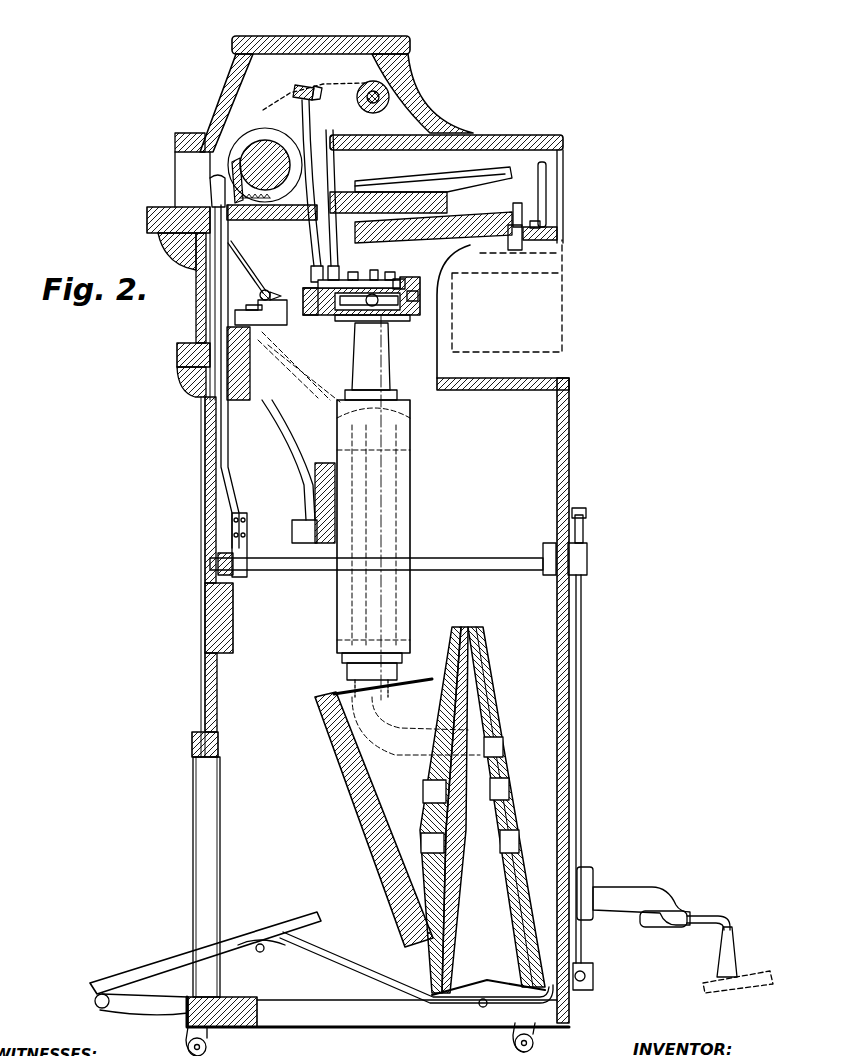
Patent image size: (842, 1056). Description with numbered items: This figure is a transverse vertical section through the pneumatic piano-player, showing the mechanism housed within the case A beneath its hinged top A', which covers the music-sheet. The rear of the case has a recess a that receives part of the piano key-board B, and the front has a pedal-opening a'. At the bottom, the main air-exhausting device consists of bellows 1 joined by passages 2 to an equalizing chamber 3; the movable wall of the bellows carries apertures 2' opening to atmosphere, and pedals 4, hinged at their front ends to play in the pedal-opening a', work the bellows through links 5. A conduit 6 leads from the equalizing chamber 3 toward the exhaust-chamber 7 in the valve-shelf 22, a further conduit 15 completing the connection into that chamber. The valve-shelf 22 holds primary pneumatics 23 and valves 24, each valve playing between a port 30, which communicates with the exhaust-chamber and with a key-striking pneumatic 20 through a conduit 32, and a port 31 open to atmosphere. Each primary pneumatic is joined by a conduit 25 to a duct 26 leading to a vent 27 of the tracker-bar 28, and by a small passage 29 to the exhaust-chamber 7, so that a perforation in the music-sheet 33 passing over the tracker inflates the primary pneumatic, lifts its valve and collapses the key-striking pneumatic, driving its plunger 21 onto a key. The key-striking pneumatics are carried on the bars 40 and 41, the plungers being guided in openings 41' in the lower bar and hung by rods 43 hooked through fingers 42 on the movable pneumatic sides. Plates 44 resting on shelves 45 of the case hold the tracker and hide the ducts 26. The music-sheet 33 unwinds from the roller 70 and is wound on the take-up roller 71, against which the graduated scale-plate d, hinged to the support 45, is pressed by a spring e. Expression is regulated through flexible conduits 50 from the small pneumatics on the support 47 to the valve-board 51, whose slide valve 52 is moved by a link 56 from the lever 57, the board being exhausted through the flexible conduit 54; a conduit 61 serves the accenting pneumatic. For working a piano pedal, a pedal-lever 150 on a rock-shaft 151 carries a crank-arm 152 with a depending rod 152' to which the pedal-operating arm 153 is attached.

The bellows 1 is at (523, 943).
The passages 2 is at (430, 810).
The apertures 2' is at (506, 807).
The equalizing chamber 3 is at (382, 792).
The pedals 4 is at (278, 928).
The links 5 is at (368, 980).
The conduit 6 is at (355, 687).
The exhaust-chamber 7 is at (334, 316).
The conduit 15 is at (382, 369).
The key-striking pneumatics 20 is at (482, 212).
The key-striking plunger 21 is at (548, 228).
The valve-shelf 22 is at (428, 297).
The primary pneumatics 23 is at (382, 328).
The valves 24 is at (402, 283).
The conduit 25 is at (320, 314).
The duct 26 is at (313, 255).
The vents 27 is at (306, 82).
The tracker-bar 28 is at (320, 90).
The passage 29 is at (395, 347).
The port 30 is at (422, 287).
The port 31 is at (374, 267).
The conduit 32 is at (333, 243).
The music-sheet 33 is at (311, 98).
The bar 40 is at (370, 198).
The lower bar 41 is at (433, 241).
The openings 41' is at (569, 204).
The projecting fingers 42 is at (531, 166).
The connecting rods 43 is at (525, 212).
The plates 44 is at (316, 127).
The shelves 45 is at (387, 143).
The support 47 is at (408, 605).
The flexible conduit 50 is at (312, 400).
The valve-board 51 is at (240, 318).
The slide valve 52 is at (250, 306).
The flexible conduit 54 is at (296, 424).
The link 56 is at (256, 289).
The lever 57 is at (220, 270).
The conduit 61 is at (300, 485).
The roller 70 is at (382, 93).
The take-up roller 71 is at (258, 148).
The pedal-lever 150 is at (225, 478).
The rock-shaft 151 is at (441, 557).
The crank-arm 152 is at (599, 541).
The depending rod 152' is at (651, 782).
The pedal operating arm 153 is at (727, 957).
The case A is at (388, 603).
The hinged top A' is at (334, 128).
The piano key-board B is at (556, 275).
The recess a is at (514, 370).
The pedal-opening a' is at (186, 877).
The graduated scale-plate d is at (240, 165).
The spring e is at (259, 196).